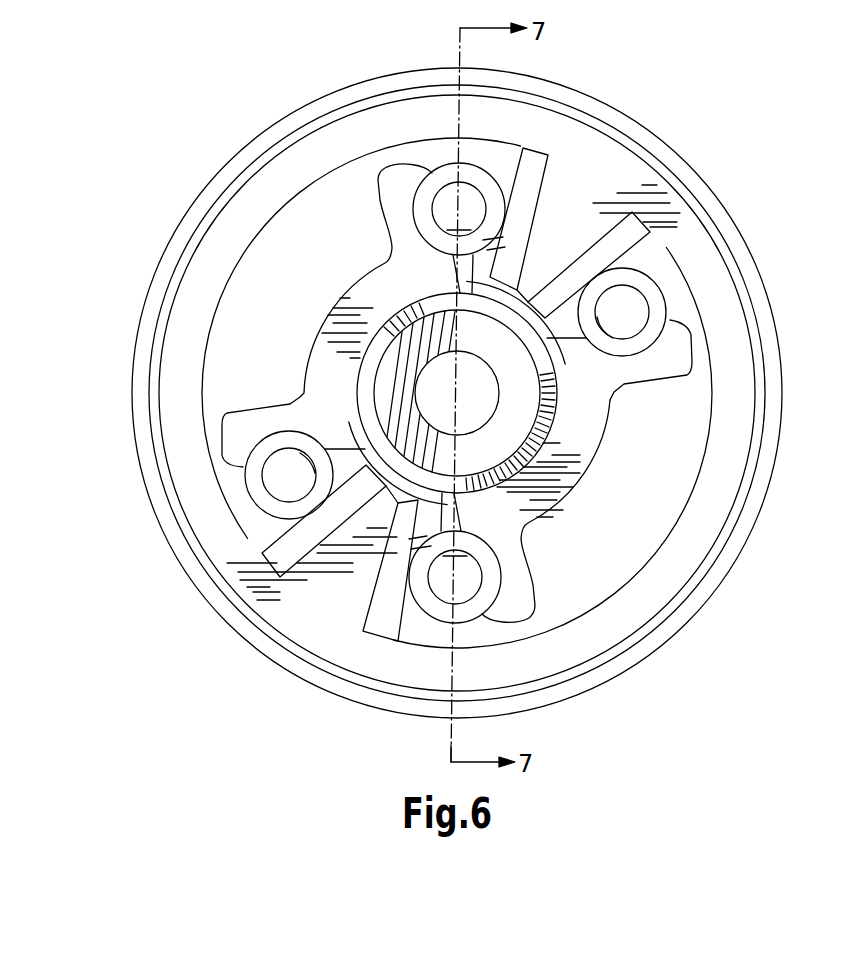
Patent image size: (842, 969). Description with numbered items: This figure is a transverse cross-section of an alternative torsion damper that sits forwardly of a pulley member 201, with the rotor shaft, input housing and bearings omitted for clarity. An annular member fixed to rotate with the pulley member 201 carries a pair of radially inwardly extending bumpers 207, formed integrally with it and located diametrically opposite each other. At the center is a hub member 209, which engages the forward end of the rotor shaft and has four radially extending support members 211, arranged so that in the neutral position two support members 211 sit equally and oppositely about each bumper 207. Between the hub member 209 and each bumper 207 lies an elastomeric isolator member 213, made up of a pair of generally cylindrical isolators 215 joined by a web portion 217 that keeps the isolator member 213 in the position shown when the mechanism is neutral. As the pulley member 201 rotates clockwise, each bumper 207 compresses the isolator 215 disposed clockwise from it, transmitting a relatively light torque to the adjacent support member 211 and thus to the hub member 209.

The pulley member 201 is at (410, 719).
The bumper 207 is at (558, 240).
The hub member 209 is at (553, 445).
The support member 211 is at (393, 193).
The isolator member 213 is at (662, 260).
The cylindrical isolator 215 is at (485, 182).
The web portion 217 is at (670, 358).